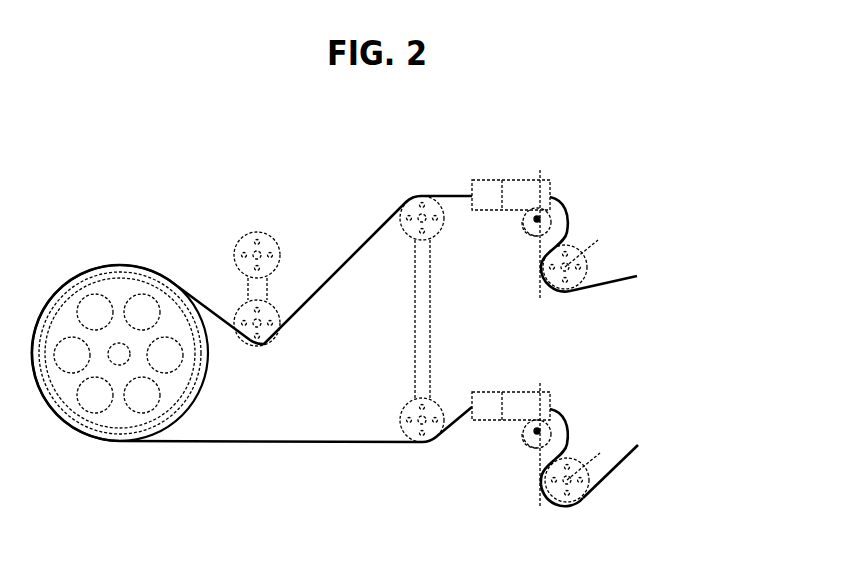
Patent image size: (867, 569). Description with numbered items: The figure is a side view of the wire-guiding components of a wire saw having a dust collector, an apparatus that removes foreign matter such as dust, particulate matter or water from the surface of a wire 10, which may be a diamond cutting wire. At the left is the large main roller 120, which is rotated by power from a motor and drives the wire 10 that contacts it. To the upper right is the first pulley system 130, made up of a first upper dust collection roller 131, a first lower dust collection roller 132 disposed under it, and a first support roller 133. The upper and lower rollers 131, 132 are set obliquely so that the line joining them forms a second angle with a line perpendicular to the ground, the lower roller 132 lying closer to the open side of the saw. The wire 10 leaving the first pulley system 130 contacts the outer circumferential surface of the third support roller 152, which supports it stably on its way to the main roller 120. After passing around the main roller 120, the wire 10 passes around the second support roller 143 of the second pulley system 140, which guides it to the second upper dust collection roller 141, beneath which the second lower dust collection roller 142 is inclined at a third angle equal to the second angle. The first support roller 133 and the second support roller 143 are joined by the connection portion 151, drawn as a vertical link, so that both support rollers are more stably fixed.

The wire 10 is at (622, 277).
The main roller 120 is at (121, 265).
The first pulley system 130 is at (530, 187).
The first upper dust collection roller 131 is at (562, 210).
The first lower dust collection roller 132 is at (592, 205).
The first support roller 133 is at (416, 196).
The second pulley system 140 is at (620, 436).
The second upper dust collection roller 141 is at (562, 414).
The second lower dust collection roller 142 is at (589, 462).
The second support roller 143 is at (432, 405).
The connection portion 151 is at (431, 318).
The third support roller 152 is at (237, 312).